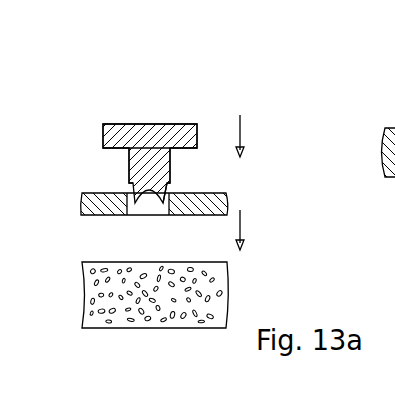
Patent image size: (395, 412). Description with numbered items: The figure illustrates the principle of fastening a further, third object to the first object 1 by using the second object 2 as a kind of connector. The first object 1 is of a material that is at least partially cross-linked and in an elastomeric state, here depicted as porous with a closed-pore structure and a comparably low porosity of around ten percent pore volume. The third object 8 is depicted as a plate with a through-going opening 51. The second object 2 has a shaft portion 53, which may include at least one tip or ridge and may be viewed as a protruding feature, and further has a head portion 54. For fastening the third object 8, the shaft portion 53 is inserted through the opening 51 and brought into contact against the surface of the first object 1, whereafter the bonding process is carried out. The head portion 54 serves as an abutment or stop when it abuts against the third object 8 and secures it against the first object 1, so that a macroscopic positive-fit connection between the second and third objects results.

The first object 1 is at (222, 295).
The second object 2 is at (149, 132).
The third object 8 is at (225, 195).
The through-going opening 51 is at (170, 190).
The shaft portion 53 is at (130, 165).
The head portion 54 is at (112, 138).